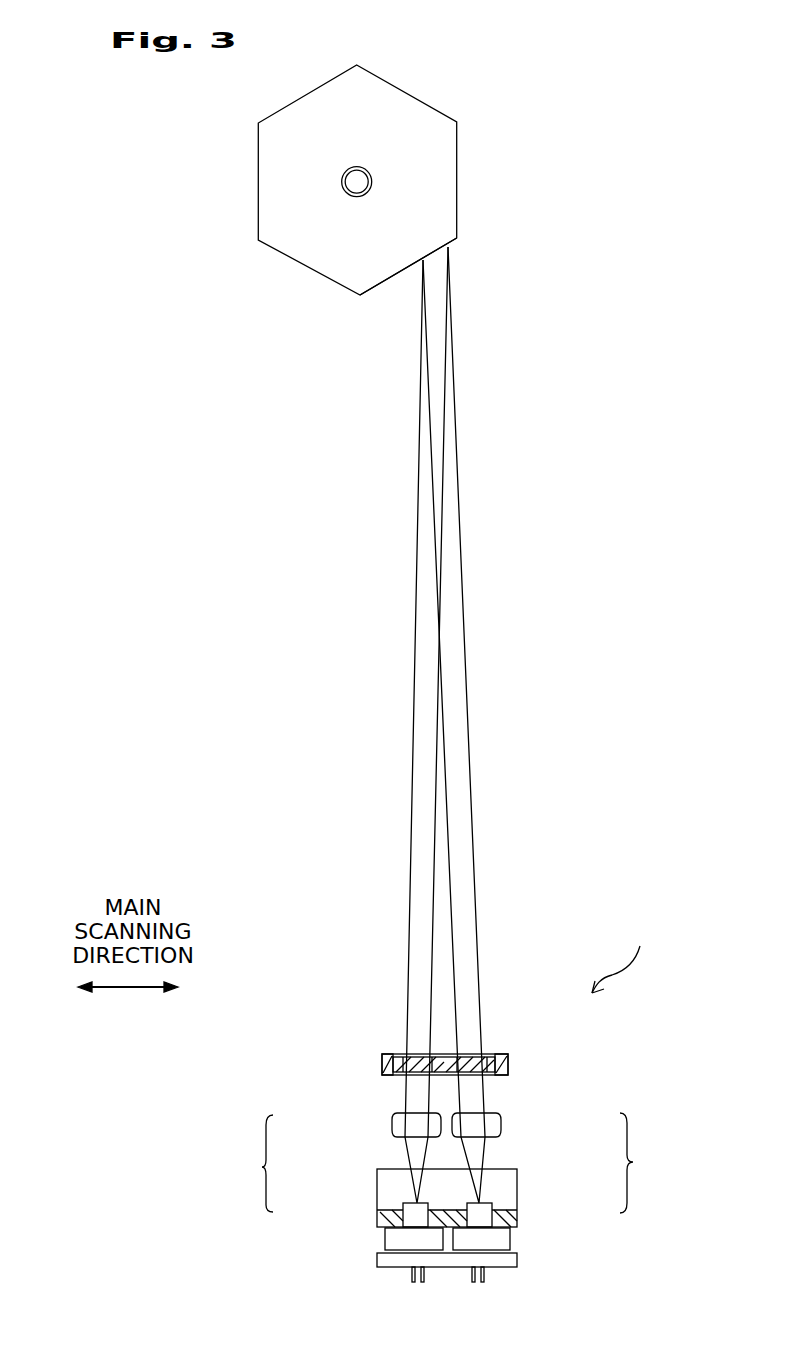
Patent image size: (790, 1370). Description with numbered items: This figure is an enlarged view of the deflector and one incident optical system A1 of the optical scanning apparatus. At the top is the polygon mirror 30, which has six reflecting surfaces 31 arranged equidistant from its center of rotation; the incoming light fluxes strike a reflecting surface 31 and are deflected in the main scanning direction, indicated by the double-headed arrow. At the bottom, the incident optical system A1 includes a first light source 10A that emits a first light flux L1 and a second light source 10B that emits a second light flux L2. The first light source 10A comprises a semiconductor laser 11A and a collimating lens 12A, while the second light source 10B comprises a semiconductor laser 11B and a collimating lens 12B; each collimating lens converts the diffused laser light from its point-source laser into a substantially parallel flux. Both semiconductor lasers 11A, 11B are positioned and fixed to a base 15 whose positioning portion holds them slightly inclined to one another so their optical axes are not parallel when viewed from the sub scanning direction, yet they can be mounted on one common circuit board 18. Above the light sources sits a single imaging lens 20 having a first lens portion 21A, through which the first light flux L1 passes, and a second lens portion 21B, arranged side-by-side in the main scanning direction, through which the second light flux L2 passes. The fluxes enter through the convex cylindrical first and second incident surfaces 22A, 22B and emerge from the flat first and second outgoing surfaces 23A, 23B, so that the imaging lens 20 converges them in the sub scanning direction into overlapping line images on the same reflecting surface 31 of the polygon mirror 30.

The polygon mirror 30 is at (421, 98).
The reflecting surface 31 is at (373, 288).
The first light flux L1 is at (475, 900).
The second light flux L2 is at (410, 886).
The incident optical system A1 is at (626, 957).
The imaging lens 20 is at (531, 1050).
The first lens portion 21A is at (508, 1063).
The second lens portion 21B is at (382, 1063).
The first incident surface 22A is at (483, 1075).
The second incident surface 22B is at (407, 1075).
The first outgoing surface 23A is at (478, 1057).
The second outgoing surface 23B is at (413, 1057).
The collimating lens 12A is at (501, 1125).
The collimating lens 12B is at (392, 1119).
The first light source 10A is at (651, 1163).
The second light source 10B is at (243, 1163).
The semiconductor laser 11A is at (486, 1208).
The semiconductor laser 11B is at (411, 1210).
The base 15 is at (502, 1181).
The circuit board 18 is at (517, 1260).